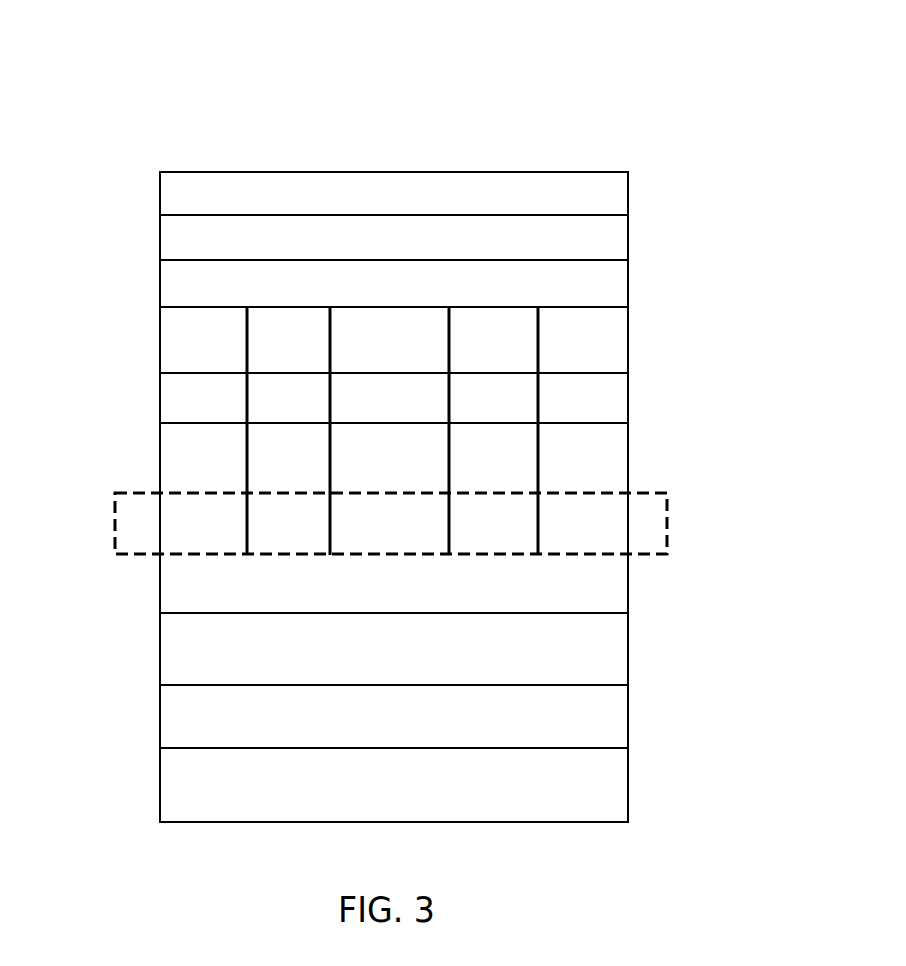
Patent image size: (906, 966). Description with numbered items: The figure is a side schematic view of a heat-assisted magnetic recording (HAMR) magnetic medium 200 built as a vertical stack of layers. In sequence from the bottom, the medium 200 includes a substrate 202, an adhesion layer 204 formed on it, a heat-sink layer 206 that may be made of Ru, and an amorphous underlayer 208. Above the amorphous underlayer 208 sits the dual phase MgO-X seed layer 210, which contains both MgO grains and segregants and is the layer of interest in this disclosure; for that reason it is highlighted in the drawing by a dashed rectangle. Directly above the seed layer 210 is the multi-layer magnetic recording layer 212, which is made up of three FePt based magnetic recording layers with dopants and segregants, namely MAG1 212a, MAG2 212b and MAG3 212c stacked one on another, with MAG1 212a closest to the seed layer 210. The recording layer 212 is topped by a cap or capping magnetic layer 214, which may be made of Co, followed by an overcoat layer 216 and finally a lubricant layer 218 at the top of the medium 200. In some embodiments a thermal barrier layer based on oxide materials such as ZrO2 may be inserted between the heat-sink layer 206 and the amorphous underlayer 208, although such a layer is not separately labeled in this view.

The HAMR magnetic medium 200 is at (83, 49).
The substrate 202 is at (630, 783).
The adhesion layer 204 is at (630, 714).
The heat-sink layer 206 is at (630, 648).
The amorphous underlayer 208 is at (630, 583).
The dual phase MgO-X seed layer 210 is at (630, 524).
The multi-layer magnetic recording layer 212 is at (441, 431).
The MAG1 212a is at (158, 459).
The MAG2 212b is at (158, 399).
The MAG3 212c is at (158, 343).
The capping magnetic layer 214 is at (630, 281).
The overcoat layer 216 is at (630, 236).
The lubricant layer 218 is at (630, 193).